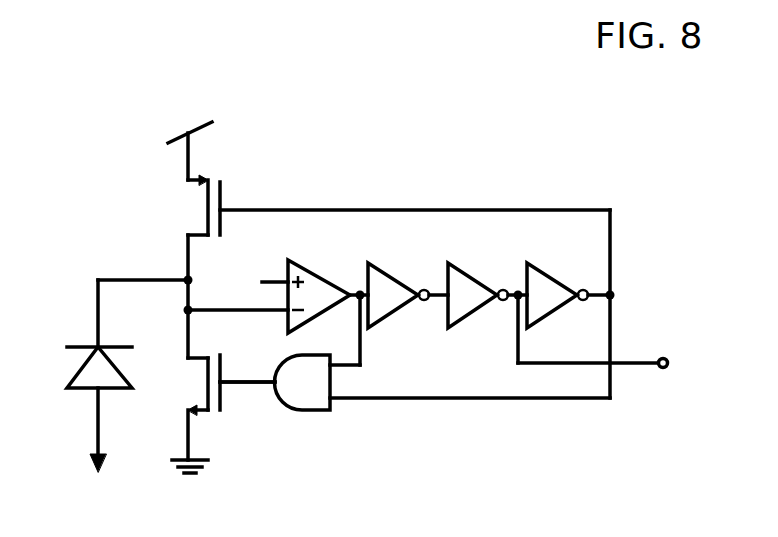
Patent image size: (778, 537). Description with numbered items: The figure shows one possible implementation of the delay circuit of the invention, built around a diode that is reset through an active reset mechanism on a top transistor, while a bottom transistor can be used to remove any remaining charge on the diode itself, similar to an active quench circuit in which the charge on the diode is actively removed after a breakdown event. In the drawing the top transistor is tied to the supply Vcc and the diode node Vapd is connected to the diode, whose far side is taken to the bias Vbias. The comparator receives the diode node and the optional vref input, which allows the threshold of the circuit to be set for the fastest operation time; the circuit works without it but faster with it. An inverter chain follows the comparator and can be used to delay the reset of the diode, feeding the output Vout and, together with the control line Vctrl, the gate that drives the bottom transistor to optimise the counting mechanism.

The supply voltage Vcc is at (192, 134).
The control voltage line Vctrl is at (415, 279).
The APD node voltage Vapd is at (138, 257).
The avalanche photodiode bias Vbias is at (96, 395).
The vref input vref is at (262, 270).
The output terminal Vout is at (620, 337).